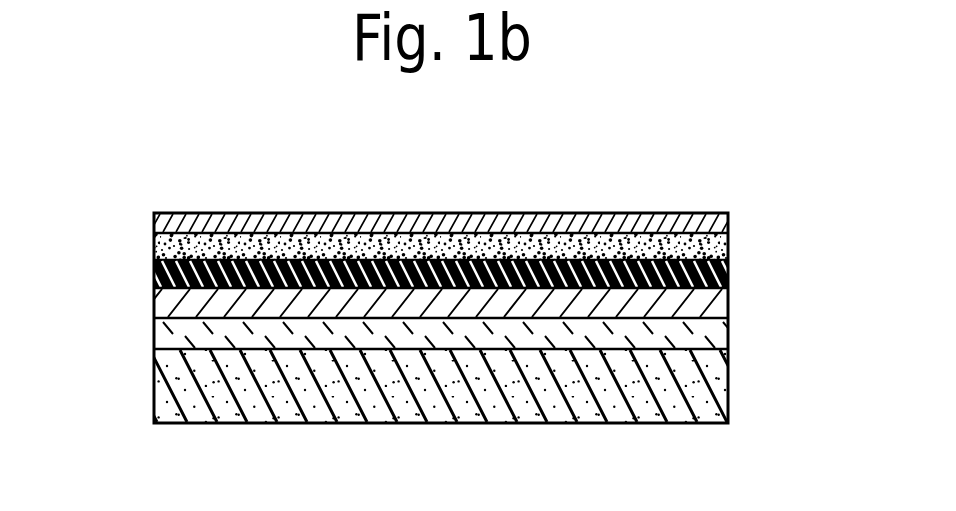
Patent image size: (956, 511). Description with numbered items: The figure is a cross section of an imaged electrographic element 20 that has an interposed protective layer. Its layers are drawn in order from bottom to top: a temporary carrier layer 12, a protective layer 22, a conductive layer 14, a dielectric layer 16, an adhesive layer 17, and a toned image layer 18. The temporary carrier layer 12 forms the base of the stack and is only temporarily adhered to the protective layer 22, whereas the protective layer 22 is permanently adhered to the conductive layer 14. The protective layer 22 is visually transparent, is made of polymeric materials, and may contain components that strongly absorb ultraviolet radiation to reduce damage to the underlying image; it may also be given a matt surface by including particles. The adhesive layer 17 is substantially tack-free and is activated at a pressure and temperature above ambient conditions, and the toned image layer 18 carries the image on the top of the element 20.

The temporary carrier layer 12 is at (390, 400).
The conductive layer 14 is at (172, 297).
The dielectric layer 16 is at (728, 272).
The adhesive layer 17 is at (154, 245).
The toned image layer 18 is at (310, 213).
The imaged electrographic element having an interposed protective layer 20 is at (753, 396).
The protective layer 22 is at (713, 337).